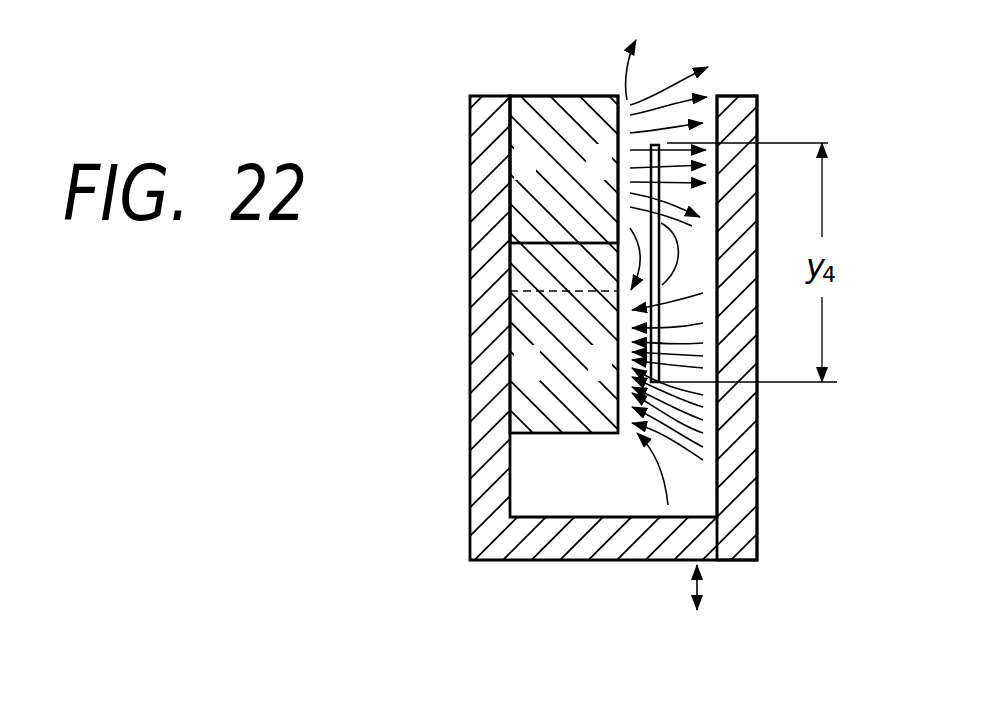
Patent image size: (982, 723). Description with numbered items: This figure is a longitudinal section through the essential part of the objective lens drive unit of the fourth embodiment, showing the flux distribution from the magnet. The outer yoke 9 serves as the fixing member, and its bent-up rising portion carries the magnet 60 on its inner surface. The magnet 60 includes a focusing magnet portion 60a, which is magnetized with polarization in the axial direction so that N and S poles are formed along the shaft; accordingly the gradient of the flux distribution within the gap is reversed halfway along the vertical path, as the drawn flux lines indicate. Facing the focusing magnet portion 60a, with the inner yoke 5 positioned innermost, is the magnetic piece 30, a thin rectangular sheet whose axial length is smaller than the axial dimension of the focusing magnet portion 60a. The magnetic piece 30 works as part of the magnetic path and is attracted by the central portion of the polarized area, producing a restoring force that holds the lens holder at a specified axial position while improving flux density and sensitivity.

The inner yoke 5 is at (758, 107).
The outer yoke 9 is at (490, 228).
The magnetic piece 30 is at (660, 383).
The magnet 60 is at (525, 318).
The focusing magnet portion 60a is at (543, 107).